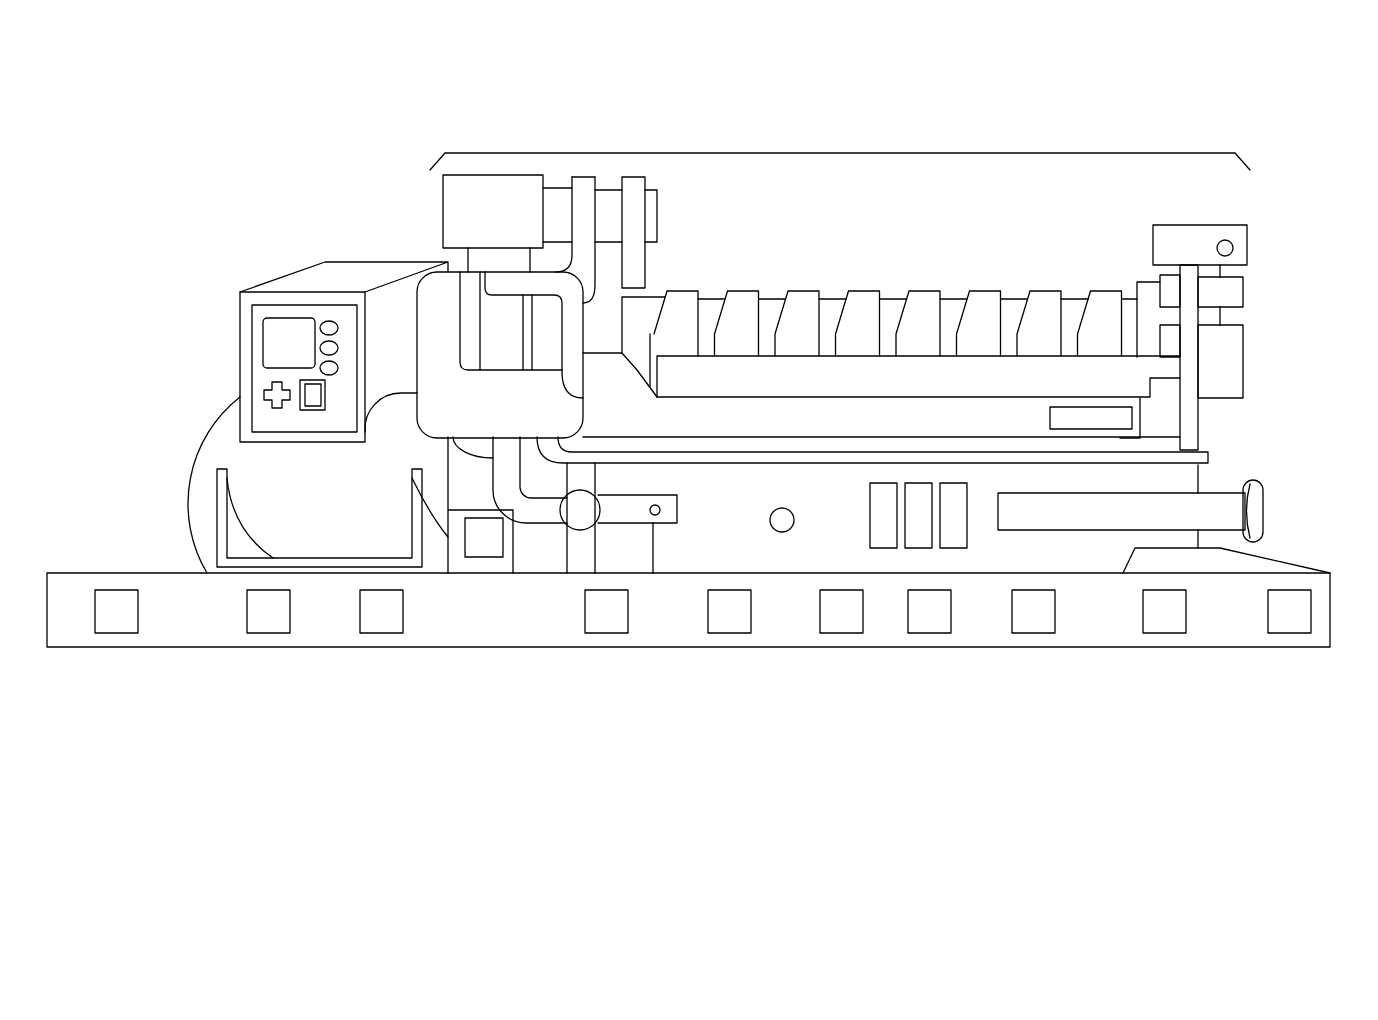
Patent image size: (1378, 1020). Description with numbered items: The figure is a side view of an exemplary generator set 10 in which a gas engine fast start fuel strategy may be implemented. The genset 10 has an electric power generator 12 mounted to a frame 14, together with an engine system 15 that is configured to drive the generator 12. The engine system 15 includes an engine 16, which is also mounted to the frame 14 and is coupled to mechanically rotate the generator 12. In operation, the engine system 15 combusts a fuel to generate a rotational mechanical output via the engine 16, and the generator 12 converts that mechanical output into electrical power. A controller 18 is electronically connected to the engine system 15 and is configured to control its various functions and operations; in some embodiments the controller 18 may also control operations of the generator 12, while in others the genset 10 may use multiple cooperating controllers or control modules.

The generator set 10 is at (208, 714).
The electric power generator 12 is at (178, 432).
The frame 14 is at (1318, 602).
The engine system 15 is at (850, 153).
The engine 16 is at (706, 517).
The controller 18 is at (221, 287).